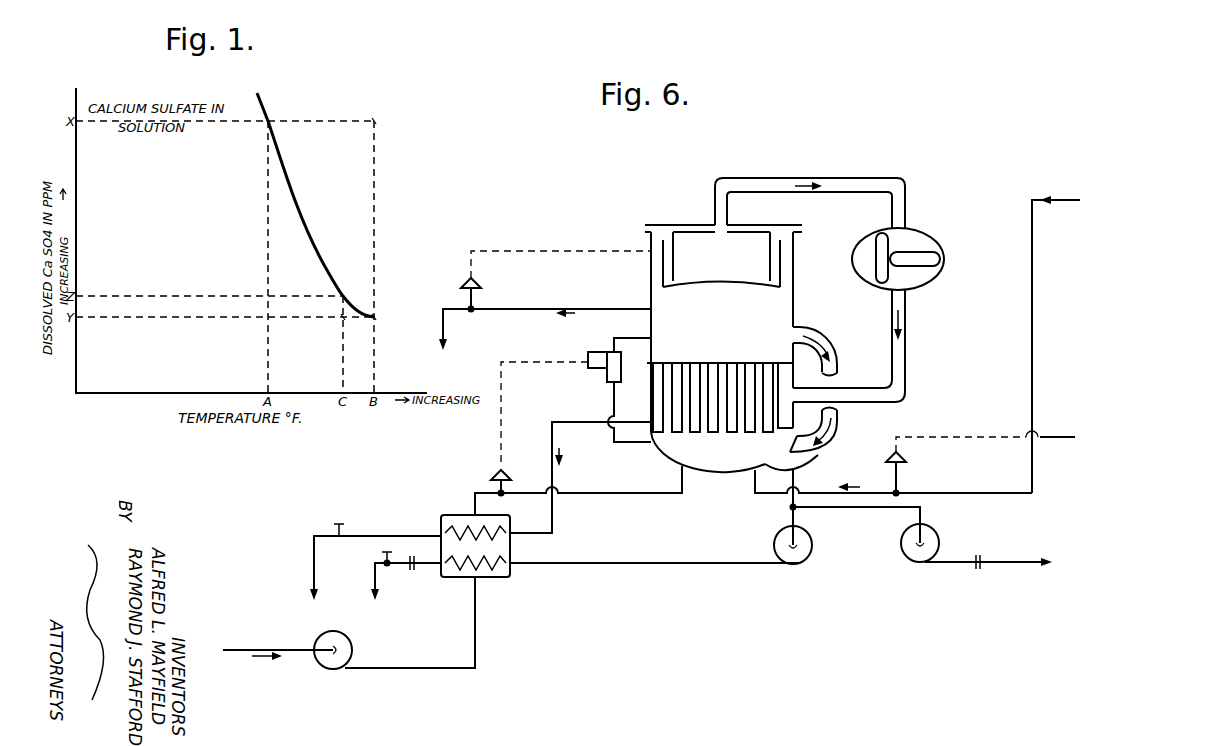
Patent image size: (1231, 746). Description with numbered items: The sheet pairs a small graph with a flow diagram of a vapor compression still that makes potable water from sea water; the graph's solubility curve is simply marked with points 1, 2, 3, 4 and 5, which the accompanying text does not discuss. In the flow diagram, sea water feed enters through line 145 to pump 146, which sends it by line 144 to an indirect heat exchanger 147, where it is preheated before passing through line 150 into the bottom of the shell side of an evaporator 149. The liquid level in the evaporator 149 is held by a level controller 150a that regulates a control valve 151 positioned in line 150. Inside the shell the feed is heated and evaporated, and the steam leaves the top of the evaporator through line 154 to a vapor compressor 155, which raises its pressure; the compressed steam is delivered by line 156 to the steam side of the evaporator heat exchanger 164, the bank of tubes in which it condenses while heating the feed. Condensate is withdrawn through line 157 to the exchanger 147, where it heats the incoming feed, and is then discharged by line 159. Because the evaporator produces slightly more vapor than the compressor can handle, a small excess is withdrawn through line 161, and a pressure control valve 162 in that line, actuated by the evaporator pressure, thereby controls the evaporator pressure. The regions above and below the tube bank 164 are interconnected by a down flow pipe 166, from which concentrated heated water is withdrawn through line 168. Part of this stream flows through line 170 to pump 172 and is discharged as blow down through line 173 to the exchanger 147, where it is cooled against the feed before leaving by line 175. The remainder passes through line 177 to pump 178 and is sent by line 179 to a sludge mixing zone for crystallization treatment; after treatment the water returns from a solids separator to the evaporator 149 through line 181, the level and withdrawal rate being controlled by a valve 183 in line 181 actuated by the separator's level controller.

In FIG. 1, the curve point 1 is at (272, 117).
In FIG. 1, the curve point 2 is at (379, 312).
In FIG. 1, the curve point 3 is at (347, 323).
In FIG. 1, the curve point 4 is at (348, 291).
In FIG. 1, the curve point 5 is at (379, 113).
In FIG. 6, the line 144 is at (422, 669).
In FIG. 6, the line 145 is at (302, 656).
In FIG. 6, the pump 146 is at (352, 646).
In FIG. 6, the indirect heat exchanger 147 is at (510, 573).
In FIG. 6, the evaporator 149 is at (795, 303).
In FIG. 6, the line 150 is at (603, 492).
In FIG. 6, the level controller 150a is at (607, 356).
In FIG. 6, the control valve 151 is at (496, 471).
In FIG. 6, the line 154 is at (762, 178).
In FIG. 6, the vapor compressor 155 is at (927, 230).
In FIG. 6, the line 156 is at (906, 389).
In FIG. 6, the line 157 is at (544, 426).
In FIG. 6, the line 159 is at (410, 529).
In FIG. 6, the line 161 is at (495, 307).
In FIG. 6, the pressure control valve 162 is at (473, 292).
In FIG. 6, the evaporator heat exchanger 164 is at (718, 362).
In FIG. 6, the down flow pipe 166 is at (816, 332).
In FIG. 6, the line 168 is at (804, 469).
In FIG. 6, the line 170 is at (789, 514).
In FIG. 6, the pump 172 is at (801, 565).
In FIG. 6, the line 173 is at (604, 566).
In FIG. 6, the line 175 is at (398, 566).
In FIG. 6, the line 177 is at (839, 507).
In FIG. 6, the pump 178 is at (938, 538).
In FIG. 6, the line 179 is at (1000, 564).
In FIG. 6, the line 181 is at (1032, 243).
In FIG. 6, the valve 183 is at (888, 459).